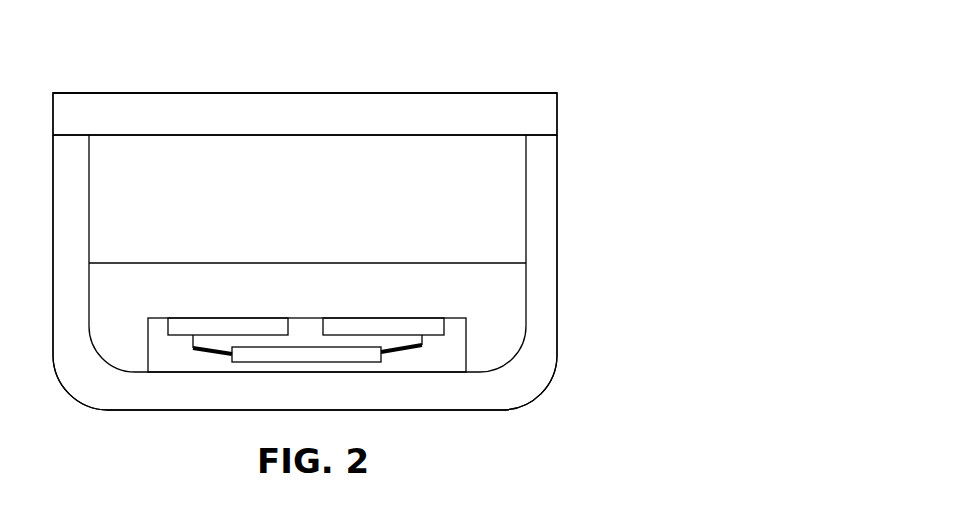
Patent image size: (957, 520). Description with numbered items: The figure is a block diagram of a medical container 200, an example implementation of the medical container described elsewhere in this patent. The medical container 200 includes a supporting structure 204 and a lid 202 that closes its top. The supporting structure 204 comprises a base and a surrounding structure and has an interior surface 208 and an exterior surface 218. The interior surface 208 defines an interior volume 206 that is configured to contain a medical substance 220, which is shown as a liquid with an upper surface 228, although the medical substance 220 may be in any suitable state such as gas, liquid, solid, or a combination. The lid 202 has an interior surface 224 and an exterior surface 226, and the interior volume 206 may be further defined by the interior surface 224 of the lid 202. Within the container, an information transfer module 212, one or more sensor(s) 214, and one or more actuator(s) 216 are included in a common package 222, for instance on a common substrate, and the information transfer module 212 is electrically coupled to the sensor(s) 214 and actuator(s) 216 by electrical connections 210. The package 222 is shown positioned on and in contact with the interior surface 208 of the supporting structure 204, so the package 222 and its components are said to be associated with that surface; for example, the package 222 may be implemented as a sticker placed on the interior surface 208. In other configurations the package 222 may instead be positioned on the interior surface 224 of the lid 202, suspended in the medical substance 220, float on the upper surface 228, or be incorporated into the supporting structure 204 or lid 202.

The medical container 200 is at (598, 62).
The lid 202 is at (557, 112).
The supporting structure 204 is at (543, 385).
The interior volume 206 is at (307, 199).
The interior surface 208 is at (89, 240).
The electrical connections 210 is at (212, 356).
The information transfer module 212 is at (305, 362).
The sensor(s) 214 is at (213, 318).
The actuator(s) 216 is at (371, 318).
The exterior surface 218 is at (557, 185).
The medical substance 220 is at (307, 317).
The package 222 is at (466, 343).
The interior surface 224 is at (395, 135).
The exterior surface 226 is at (425, 93).
The upper surface 228 is at (430, 263).